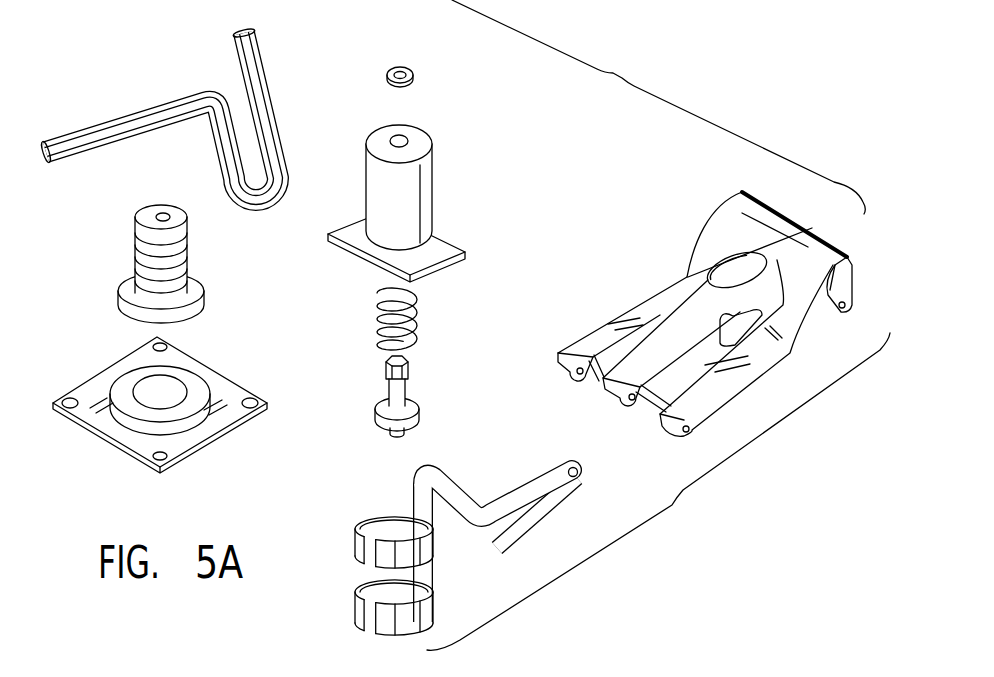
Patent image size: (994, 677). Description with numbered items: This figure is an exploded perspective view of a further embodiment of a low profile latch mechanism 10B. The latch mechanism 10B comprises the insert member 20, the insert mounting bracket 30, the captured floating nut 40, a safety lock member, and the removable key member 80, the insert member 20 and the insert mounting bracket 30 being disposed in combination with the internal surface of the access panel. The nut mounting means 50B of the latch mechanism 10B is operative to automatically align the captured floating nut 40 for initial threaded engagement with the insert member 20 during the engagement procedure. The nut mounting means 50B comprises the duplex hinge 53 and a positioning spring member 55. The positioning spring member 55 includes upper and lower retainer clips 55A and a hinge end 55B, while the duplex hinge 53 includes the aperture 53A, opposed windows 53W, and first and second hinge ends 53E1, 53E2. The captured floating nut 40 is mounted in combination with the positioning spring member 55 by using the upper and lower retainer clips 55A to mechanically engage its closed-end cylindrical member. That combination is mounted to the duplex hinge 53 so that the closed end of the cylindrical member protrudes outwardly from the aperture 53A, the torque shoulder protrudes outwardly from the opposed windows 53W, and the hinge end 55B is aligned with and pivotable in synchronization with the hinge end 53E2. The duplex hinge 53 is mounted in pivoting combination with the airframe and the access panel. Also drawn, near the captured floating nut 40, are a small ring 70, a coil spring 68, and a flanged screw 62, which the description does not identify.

The low profile latch mechanism 10B is at (658, 107).
The nut mounting means 50B is at (658, 491).
The removable key member 80 is at (173, 84).
The insert member 20 is at (206, 258).
The insert mounting bracket 30 is at (232, 351).
The split ring / retaining washer 70 is at (413, 74).
The captured floating nut 40 is at (450, 159).
The coil spring 68 is at (433, 335).
The hex-head screw with flange 62 is at (412, 385).
The positioning spring member 55 is at (389, 503).
The upper and lower retainer clips 55A is at (353, 605).
The hinge end 55B is at (579, 460).
The duplex hinge 53 is at (658, 224).
The aperture 53A is at (808, 228).
The first hinge end 53E1 is at (855, 308).
The second hinge end 53E2 is at (636, 404).
The opposed windows 53W is at (720, 335).